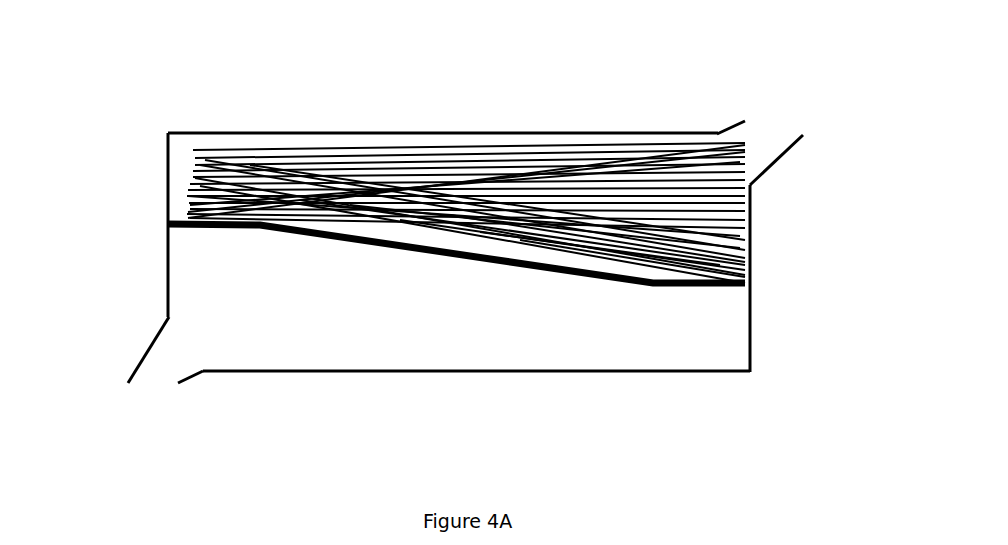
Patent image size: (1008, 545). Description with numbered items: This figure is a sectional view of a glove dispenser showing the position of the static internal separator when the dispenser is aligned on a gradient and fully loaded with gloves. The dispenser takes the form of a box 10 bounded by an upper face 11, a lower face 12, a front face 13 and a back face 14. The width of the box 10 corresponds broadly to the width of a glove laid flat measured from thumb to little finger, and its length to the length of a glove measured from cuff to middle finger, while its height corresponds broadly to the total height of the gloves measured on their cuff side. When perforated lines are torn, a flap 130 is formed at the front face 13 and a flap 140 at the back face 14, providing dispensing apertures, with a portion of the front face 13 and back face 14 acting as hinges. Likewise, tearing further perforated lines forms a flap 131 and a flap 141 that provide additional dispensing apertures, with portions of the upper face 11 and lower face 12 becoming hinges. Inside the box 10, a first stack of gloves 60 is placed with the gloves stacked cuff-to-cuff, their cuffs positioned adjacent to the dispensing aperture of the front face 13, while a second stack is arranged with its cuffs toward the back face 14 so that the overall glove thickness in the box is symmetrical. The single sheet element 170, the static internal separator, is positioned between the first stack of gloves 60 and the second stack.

The box 10 is at (367, 98).
The upper face 11 is at (540, 132).
The lower face 12 is at (347, 375).
The front face 13 is at (750, 325).
The back face 14 is at (168, 258).
The first stack of gloves 60 is at (563, 252).
The flap 130 is at (758, 177).
The flap 131 is at (730, 125).
The flap 140 is at (143, 352).
The flap 141 is at (195, 375).
The single sheet element 170 is at (455, 255).